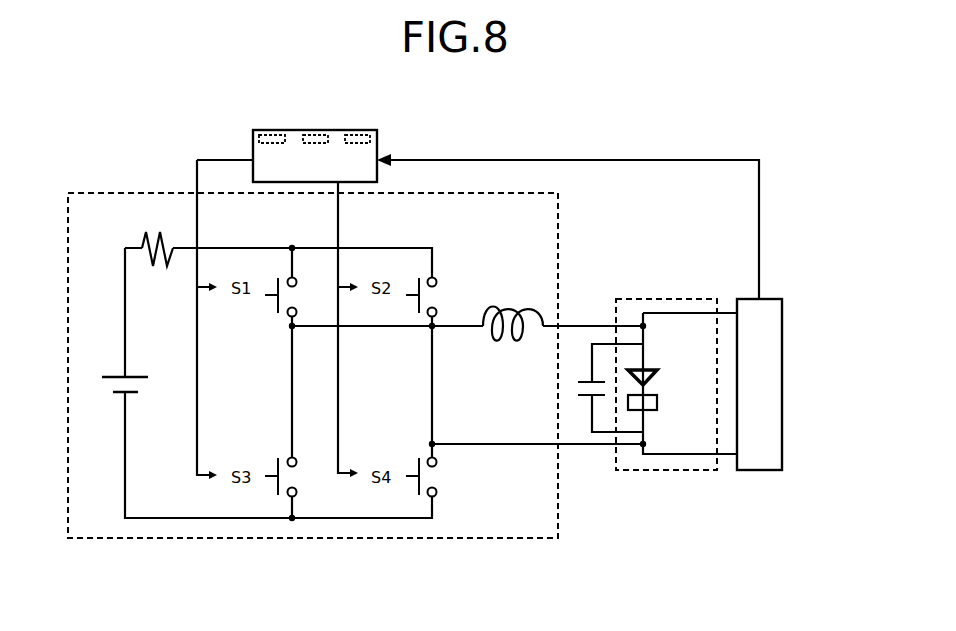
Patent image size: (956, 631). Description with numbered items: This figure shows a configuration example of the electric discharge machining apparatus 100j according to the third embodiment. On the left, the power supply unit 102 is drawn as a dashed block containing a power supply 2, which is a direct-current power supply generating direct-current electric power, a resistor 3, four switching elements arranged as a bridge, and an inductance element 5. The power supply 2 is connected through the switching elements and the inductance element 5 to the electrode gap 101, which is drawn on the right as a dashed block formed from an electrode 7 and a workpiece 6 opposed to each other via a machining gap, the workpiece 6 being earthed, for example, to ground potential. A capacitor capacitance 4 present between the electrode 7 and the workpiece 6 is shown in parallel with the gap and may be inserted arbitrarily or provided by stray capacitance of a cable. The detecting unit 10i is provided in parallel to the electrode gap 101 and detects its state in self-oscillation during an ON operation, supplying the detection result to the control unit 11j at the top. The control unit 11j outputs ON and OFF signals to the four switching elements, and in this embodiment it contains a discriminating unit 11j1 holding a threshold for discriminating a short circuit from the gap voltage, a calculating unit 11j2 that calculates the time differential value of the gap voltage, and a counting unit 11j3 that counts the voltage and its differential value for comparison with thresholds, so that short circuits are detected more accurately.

The electric discharge machining apparatus 100j is at (722, 142).
The control unit 11j is at (253, 146).
The discriminating unit 11j1 is at (274, 134).
The calculating unit 11j2 is at (322, 134).
The counting unit 11j3 is at (366, 134).
The resistor 3 is at (148, 242).
The power supply 2 is at (116, 393).
The inductance element 5 is at (496, 312).
The capacitor capacitance 4 is at (586, 378).
The electrode 7 is at (656, 372).
The workpiece 6 is at (657, 410).
The electrode gap 101 is at (655, 297).
The power supply unit 102 is at (205, 540).
The detecting unit 10i is at (784, 312).